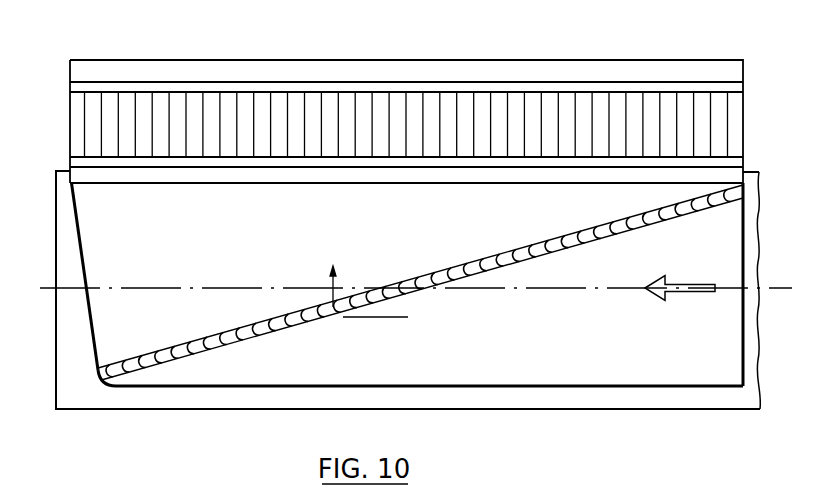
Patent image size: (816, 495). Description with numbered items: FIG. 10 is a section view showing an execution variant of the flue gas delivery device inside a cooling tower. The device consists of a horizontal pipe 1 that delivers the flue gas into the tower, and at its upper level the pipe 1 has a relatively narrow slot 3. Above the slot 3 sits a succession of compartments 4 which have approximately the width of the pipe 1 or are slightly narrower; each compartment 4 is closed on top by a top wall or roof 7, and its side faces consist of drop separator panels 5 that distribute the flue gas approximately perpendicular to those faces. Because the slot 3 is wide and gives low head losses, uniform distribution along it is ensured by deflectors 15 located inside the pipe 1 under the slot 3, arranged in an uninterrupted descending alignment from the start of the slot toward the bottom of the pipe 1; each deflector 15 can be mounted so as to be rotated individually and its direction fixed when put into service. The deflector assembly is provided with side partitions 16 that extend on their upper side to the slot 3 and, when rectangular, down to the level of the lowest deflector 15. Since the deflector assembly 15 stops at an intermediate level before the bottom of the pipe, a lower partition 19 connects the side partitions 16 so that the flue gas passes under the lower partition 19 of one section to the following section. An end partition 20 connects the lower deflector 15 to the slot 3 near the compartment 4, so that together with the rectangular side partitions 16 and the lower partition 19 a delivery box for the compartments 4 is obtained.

The horizontal pipe 1 is at (165, 411).
The slot 3 is at (255, 173).
The compartments 4 is at (263, 117).
The drop separator panels 5 is at (400, 93).
The top wall or roof 7 is at (145, 68).
The deflectors 15 is at (515, 262).
The side partitions 16 is at (617, 358).
The lower partition 19 is at (370, 383).
The end partition 20 is at (83, 265).